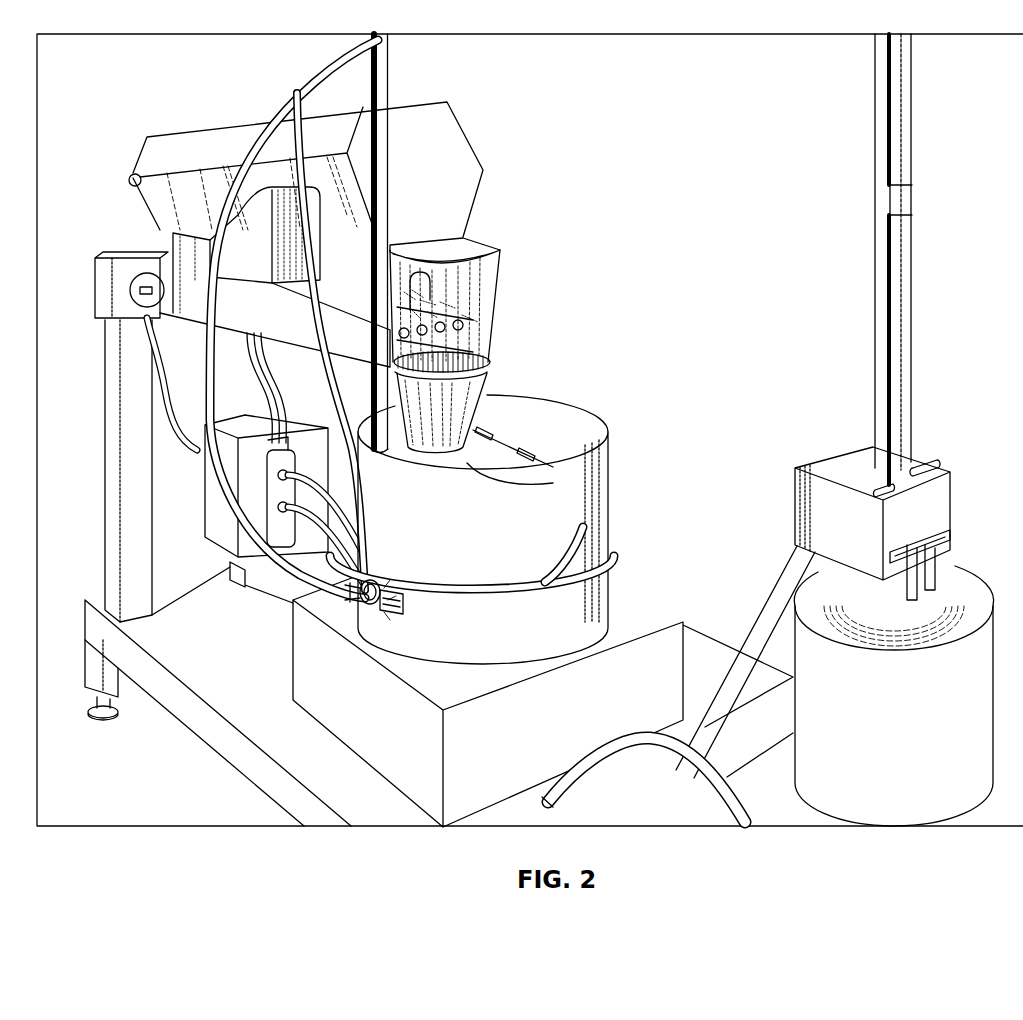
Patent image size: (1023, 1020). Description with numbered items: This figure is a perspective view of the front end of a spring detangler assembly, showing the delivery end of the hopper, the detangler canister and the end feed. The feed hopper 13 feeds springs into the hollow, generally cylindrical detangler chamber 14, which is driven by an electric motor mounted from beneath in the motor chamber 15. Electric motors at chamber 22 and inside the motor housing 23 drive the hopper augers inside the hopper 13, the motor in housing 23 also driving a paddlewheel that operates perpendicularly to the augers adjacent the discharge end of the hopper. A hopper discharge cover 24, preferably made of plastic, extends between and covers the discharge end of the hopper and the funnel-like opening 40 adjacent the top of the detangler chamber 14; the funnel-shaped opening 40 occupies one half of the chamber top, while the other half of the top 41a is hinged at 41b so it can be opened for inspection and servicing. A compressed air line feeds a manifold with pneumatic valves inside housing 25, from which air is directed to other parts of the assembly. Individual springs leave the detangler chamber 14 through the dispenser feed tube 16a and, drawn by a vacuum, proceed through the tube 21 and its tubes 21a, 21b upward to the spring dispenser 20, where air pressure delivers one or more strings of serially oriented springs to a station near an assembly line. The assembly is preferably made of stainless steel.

The feed hopper 13 is at (478, 125).
The detangler chamber 14 is at (459, 535).
The motor chamber 15 is at (405, 740).
The dispenser feed tube 16a is at (400, 606).
The spring dispenser 20 is at (928, 493).
The supply conduit 21 is at (905, 283).
The tube 21a is at (583, 527).
The tube 21b is at (205, 366).
The chamber 22 is at (95, 272).
The motor housing 23 is at (256, 251).
The hopper discharge cover 24 is at (463, 252).
The housing 25 is at (215, 497).
The funnel-like opening 40 is at (470, 393).
The other half of the top 41a is at (558, 470).
The hinge 41b is at (545, 417).